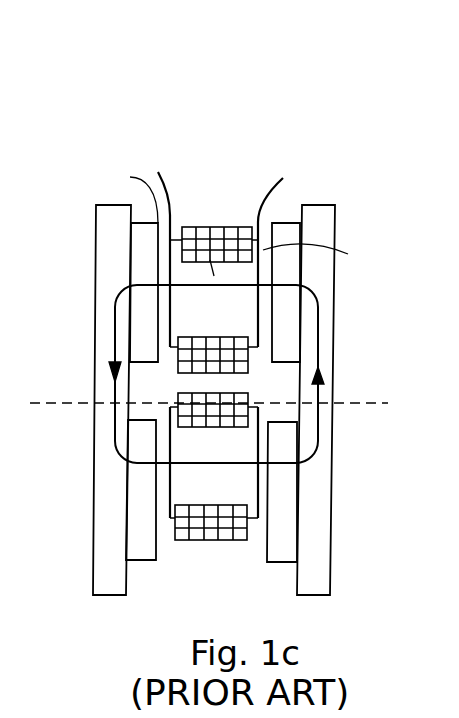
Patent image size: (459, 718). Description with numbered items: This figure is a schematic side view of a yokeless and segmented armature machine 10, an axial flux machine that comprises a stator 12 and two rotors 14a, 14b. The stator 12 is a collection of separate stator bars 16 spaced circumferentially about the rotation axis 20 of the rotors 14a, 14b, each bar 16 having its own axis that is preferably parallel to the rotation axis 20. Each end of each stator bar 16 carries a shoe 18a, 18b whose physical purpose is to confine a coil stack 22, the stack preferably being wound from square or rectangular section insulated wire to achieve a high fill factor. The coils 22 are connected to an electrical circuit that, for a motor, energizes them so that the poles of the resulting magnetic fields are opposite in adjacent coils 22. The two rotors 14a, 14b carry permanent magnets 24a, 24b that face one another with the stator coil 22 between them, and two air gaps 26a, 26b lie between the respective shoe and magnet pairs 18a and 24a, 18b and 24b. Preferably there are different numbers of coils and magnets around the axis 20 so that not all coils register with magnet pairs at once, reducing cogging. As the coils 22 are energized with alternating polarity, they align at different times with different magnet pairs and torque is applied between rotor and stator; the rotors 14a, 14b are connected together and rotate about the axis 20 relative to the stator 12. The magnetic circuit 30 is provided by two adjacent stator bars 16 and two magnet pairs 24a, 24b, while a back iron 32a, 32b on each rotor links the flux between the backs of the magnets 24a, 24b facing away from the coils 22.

The yokeless and segmented armature machine 10 is at (258, 109).
The stator 12 is at (196, 564).
The rotor 14a is at (104, 596).
The rotor 14b is at (312, 597).
The stator bar 16 is at (209, 230).
The shoe 18a is at (156, 331).
The shoe 18b is at (282, 333).
The rotation axis 20 is at (57, 402).
The coil stack 22 is at (190, 227).
The permanent magnet 24a is at (138, 328).
The permanent magnet 24b is at (290, 337).
The air gap 26a is at (121, 188).
The air gap 26b is at (327, 252).
The magnetic circuit 30 is at (320, 426).
The back iron 32a is at (103, 553).
The back iron 32b is at (315, 548).